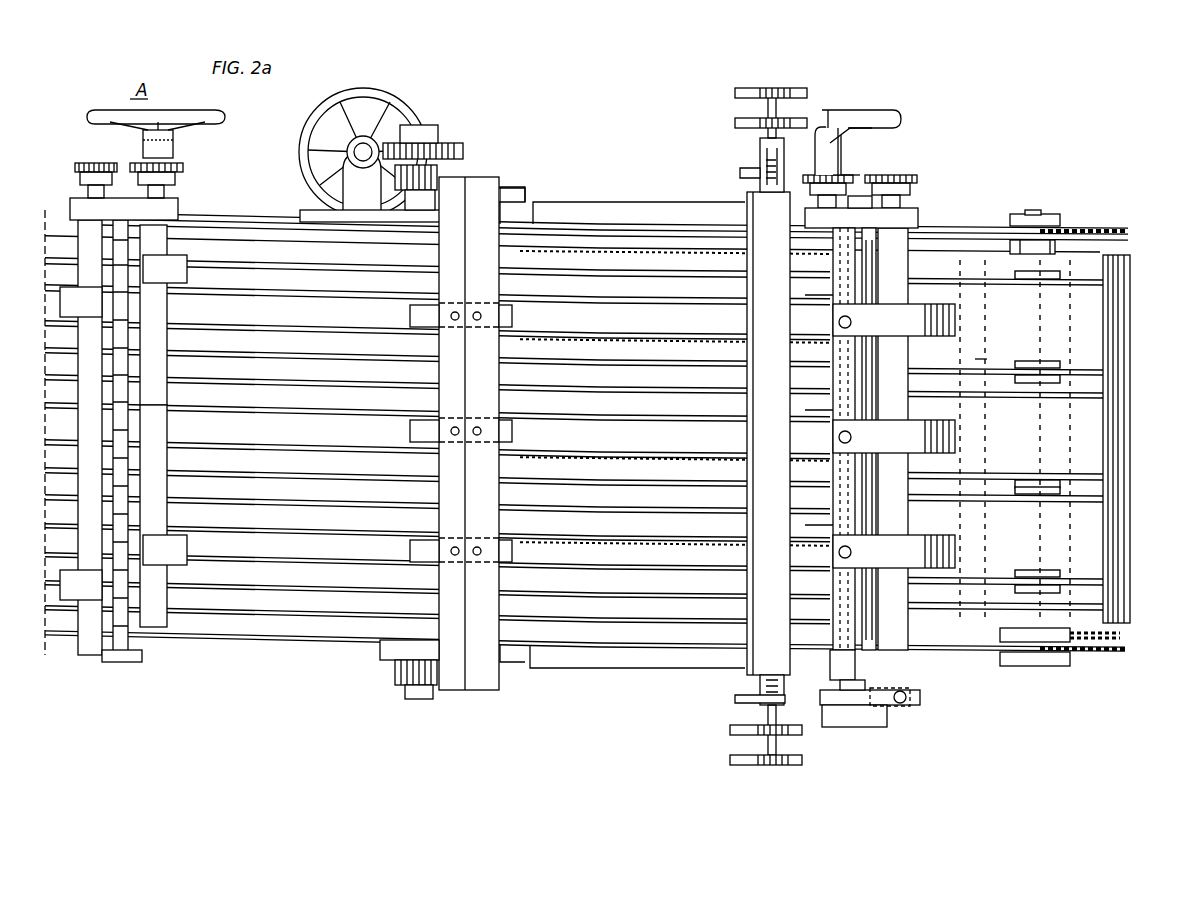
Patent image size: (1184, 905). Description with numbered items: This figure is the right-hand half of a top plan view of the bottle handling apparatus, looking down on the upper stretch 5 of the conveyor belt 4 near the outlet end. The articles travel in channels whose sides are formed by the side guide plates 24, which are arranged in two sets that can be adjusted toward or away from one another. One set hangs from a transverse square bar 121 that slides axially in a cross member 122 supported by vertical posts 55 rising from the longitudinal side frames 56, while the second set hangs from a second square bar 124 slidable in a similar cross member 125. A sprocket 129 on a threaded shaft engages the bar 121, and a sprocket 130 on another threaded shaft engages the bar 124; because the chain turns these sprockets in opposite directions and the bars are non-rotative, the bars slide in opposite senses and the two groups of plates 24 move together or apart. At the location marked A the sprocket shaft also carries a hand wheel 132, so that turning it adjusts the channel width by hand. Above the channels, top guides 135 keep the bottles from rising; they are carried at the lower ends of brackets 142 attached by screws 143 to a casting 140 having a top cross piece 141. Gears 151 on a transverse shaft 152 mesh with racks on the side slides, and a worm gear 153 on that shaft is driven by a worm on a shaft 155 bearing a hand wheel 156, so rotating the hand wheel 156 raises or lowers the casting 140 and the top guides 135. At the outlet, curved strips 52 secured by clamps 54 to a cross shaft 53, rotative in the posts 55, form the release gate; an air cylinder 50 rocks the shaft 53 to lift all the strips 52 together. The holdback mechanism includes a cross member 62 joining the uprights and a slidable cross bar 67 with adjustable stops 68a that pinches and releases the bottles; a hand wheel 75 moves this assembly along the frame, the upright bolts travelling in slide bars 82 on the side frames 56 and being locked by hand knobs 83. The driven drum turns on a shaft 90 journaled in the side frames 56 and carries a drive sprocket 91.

The conveyor belt 4 is at (1124, 424).
The upper stretch 5 is at (981, 349).
The side guide plates 24 is at (328, 359).
The air cylinder 50 is at (862, 728).
The curved strips 52 is at (955, 320).
The cross shaft 53 is at (855, 520).
The clamps 54 is at (833, 432).
The vertical posts 55 is at (918, 216).
The side frames 56 is at (228, 218).
The cross member 62 is at (782, 368).
The slidable cross bar 67 is at (758, 158).
The adjustable stops 68a is at (763, 136).
The hand wheel 75 is at (885, 108).
The slide bars 82 is at (654, 210).
The hand knobs 83 is at (740, 175).
The shaft 90 is at (1040, 213).
The sprocket 91 is at (1122, 636).
The transverse square bar 121 is at (93, 555).
The cross member 122 is at (113, 636).
The second square bar 124 is at (155, 462).
The cross member 125 is at (143, 345).
The sprocket 129 is at (90, 152).
The sprocket 130 is at (184, 168).
The hand wheel 132 is at (205, 105).
The top guides 135 is at (680, 306).
The casting 140 is at (488, 258).
The top cross piece 141 is at (486, 188).
The brackets 142 is at (418, 305).
The screws 143 is at (458, 320).
The gears 151 is at (438, 172).
The shaft 152 is at (418, 200).
The worm gear 153 is at (452, 150).
The shaft 155 is at (355, 152).
The hand wheel 156 is at (398, 121).